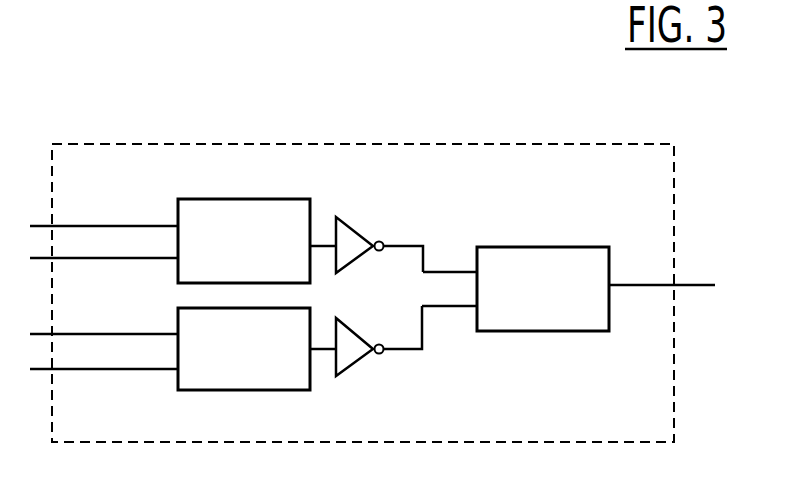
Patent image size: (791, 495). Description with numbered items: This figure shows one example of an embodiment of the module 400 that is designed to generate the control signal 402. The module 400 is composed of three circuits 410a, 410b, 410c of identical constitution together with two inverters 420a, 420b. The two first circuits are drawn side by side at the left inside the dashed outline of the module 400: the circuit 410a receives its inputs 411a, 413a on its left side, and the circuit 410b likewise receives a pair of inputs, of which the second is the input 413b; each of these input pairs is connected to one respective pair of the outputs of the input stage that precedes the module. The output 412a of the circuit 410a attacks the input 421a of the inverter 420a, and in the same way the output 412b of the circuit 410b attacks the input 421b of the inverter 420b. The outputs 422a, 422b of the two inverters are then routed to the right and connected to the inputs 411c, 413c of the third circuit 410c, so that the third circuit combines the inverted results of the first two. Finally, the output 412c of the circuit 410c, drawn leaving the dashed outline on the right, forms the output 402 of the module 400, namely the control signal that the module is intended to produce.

The module 400 is at (337, 142).
The control signal 402 is at (722, 287).
The circuit 410a is at (270, 199).
The circuit 410b is at (220, 390).
The circuit 410c is at (580, 333).
The input 411a is at (128, 226).
The input 411c is at (462, 272).
The output 412a is at (311, 245).
The output 412b is at (311, 350).
The output 412c is at (640, 285).
The input 413a is at (136, 258).
The input 413b is at (130, 369).
The input 413c is at (462, 308).
The inverter 420a is at (385, 238).
The inverter 420b is at (370, 358).
The input 421a is at (330, 245).
The input 421b is at (330, 347).
The output 422a is at (405, 246).
The output 422b is at (400, 350).